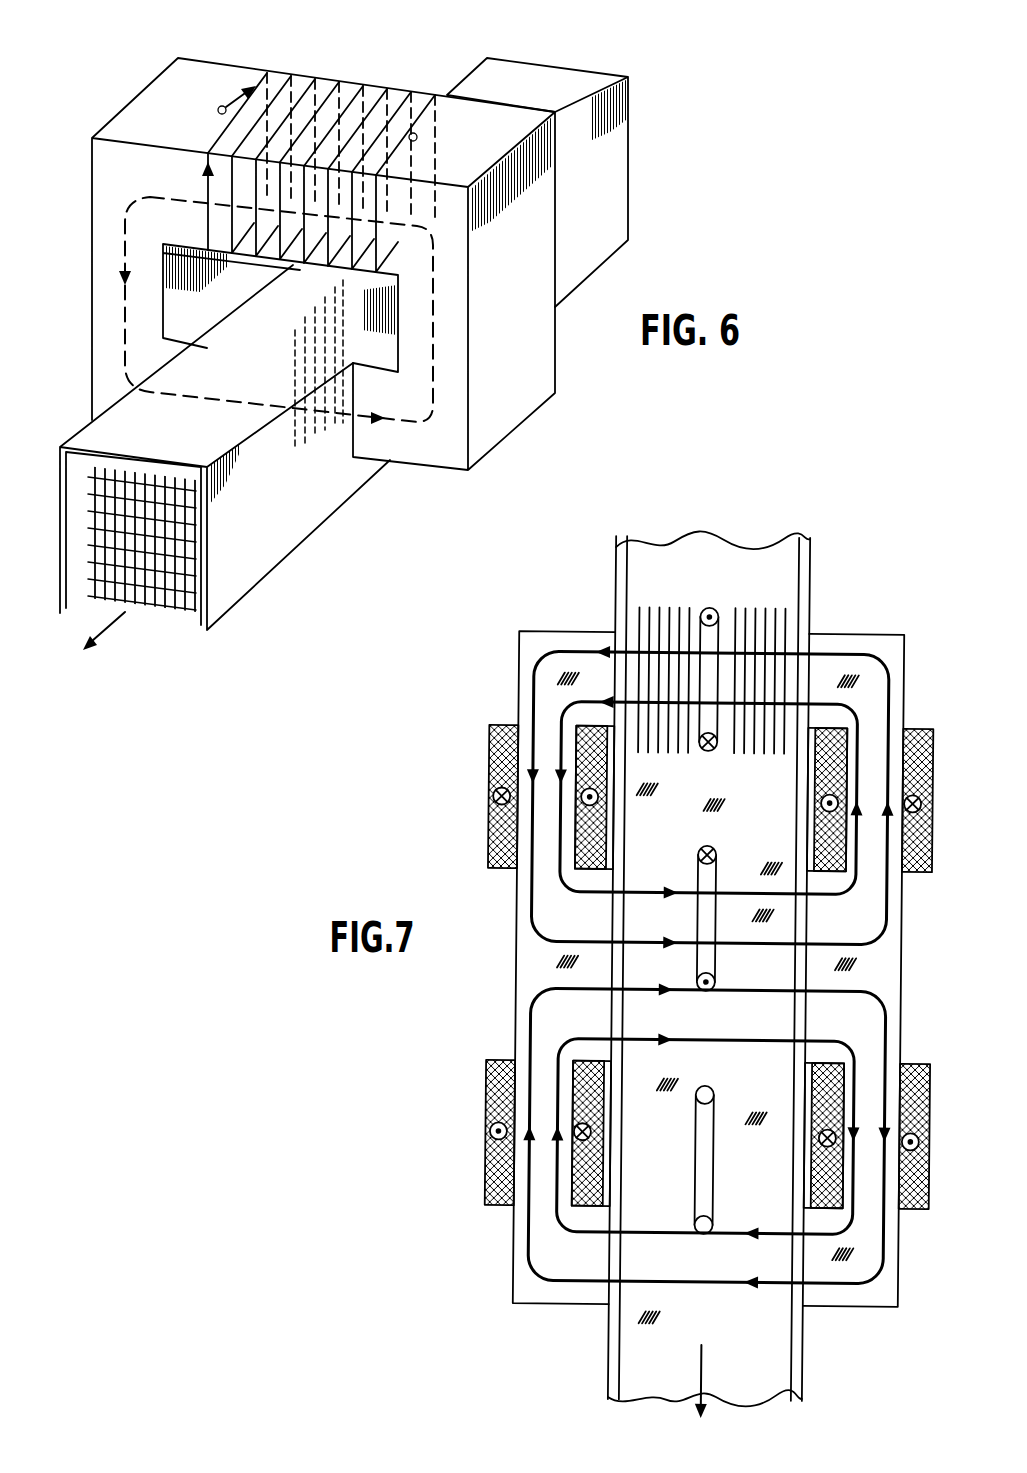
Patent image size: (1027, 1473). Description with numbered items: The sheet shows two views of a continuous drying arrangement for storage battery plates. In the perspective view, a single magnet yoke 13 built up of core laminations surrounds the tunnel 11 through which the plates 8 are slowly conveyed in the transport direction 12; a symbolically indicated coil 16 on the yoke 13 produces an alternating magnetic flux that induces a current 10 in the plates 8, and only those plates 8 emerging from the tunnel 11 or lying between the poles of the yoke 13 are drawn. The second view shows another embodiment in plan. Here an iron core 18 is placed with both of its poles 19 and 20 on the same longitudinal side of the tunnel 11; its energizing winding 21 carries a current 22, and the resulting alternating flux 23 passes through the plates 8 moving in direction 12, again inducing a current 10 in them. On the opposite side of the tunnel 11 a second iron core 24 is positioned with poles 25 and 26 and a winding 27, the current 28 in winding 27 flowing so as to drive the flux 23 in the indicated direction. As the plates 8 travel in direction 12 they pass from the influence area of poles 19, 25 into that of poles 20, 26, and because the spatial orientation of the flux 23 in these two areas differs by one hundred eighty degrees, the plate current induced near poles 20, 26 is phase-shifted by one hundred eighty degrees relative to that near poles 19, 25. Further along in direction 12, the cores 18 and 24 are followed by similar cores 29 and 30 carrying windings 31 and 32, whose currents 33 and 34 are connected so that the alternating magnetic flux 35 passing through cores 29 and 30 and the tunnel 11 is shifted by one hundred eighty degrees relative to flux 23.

In FIG. 6, the plates 8 is at (324, 437).
In FIG. 7, the plates 8 is at (667, 610).
In FIG. 7, the current 10 is at (712, 609).
In FIG. 6, the tunnel 11 is at (553, 84).
In FIG. 7, the tunnel 11 is at (812, 565).
In FIG. 6, the transport direction 12 is at (108, 625).
In FIG. 7, the transport direction 12 is at (708, 1362).
In FIG. 6, the magnet yoke 13 is at (218, 77).
In FIG. 6, the coil 16 is at (262, 72).
In FIG. 7, the iron core 18 is at (897, 705).
In FIG. 7, the pole 19 is at (830, 668).
In FIG. 7, the pole 20 is at (873, 920).
In FIG. 7, the energizing winding 21 is at (932, 850).
In FIG. 7, the current 22 is at (932, 800).
In FIG. 7, the alternating flux 23 is at (548, 652).
In FIG. 7, the iron core 24 is at (519, 705).
In FIG. 7, the pole 25 is at (583, 680).
In FIG. 7, the pole 26 is at (543, 905).
In FIG. 7, the winding 27 is at (487, 840).
In FIG. 7, the current 28 is at (491, 800).
In FIG. 7, the core 29 is at (868, 1058).
In FIG. 7, the core 30 is at (540, 1057).
In FIG. 7, the winding 31 is at (908, 1070).
In FIG. 7, the winding 32 is at (487, 1102).
In FIG. 7, the current 33 is at (930, 1138).
In FIG. 7, the current 34 is at (491, 1138).
In FIG. 7, the alternating magnetic flux 35 is at (890, 1255).